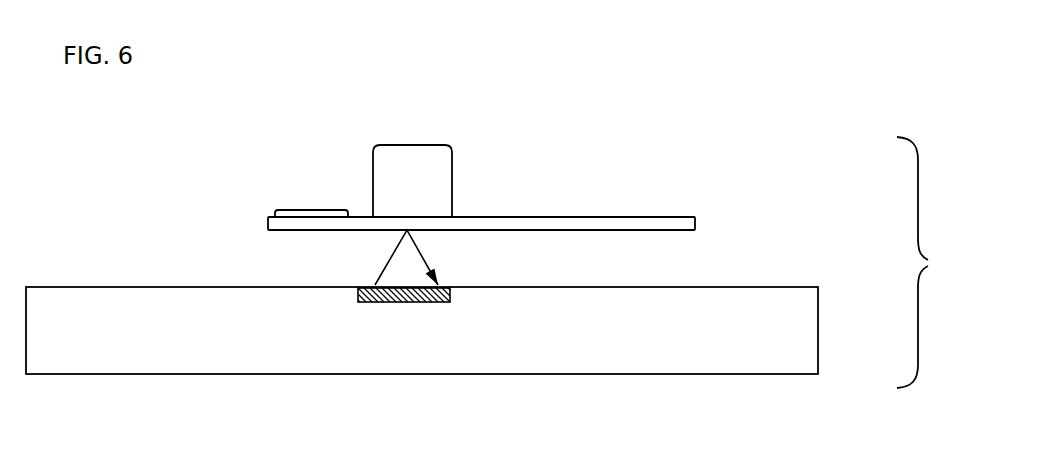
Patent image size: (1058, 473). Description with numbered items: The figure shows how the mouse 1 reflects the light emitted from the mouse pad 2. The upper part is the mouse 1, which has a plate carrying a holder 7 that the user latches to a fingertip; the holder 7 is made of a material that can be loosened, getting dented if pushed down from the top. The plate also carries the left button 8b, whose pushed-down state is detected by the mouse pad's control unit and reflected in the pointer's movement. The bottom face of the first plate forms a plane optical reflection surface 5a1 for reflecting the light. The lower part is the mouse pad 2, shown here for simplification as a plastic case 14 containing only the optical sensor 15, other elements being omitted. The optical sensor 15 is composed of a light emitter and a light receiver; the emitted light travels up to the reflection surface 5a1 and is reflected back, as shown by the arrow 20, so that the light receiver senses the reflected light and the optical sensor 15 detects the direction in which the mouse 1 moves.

The mouse 1 is at (546, 176).
The mouse pad 2 is at (477, 364).
The plane optical reflection surface 5a1 is at (302, 230).
The holder 7 is at (432, 146).
The left button 8b is at (315, 210).
The plastic case 14 is at (650, 378).
The optical sensor 15 is at (440, 300).
The arrow 20 is at (418, 253).